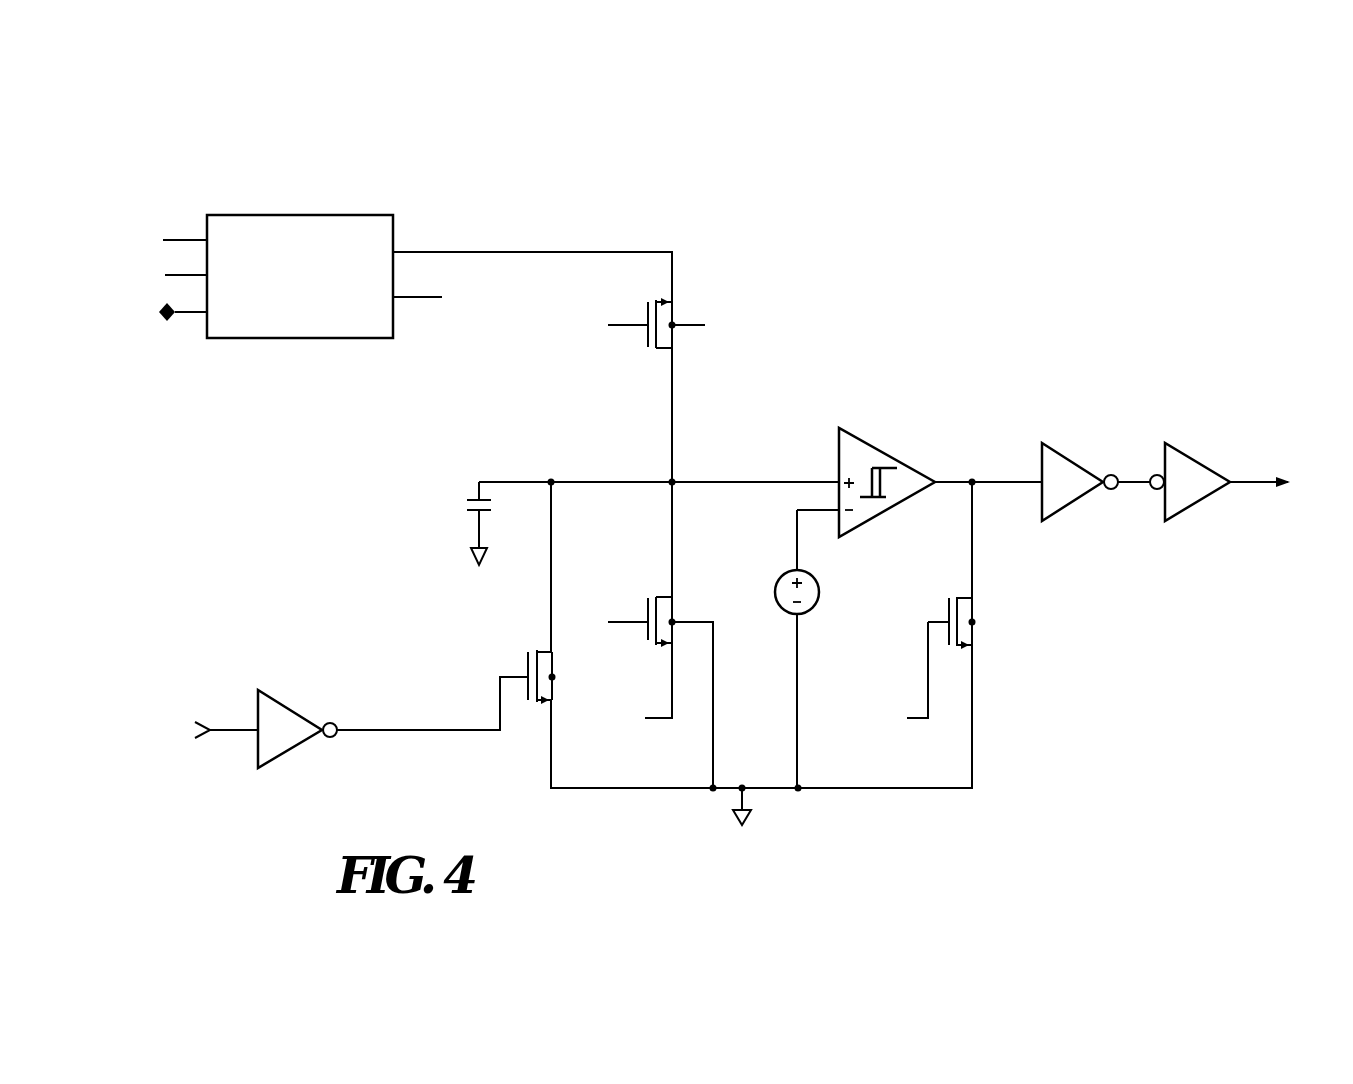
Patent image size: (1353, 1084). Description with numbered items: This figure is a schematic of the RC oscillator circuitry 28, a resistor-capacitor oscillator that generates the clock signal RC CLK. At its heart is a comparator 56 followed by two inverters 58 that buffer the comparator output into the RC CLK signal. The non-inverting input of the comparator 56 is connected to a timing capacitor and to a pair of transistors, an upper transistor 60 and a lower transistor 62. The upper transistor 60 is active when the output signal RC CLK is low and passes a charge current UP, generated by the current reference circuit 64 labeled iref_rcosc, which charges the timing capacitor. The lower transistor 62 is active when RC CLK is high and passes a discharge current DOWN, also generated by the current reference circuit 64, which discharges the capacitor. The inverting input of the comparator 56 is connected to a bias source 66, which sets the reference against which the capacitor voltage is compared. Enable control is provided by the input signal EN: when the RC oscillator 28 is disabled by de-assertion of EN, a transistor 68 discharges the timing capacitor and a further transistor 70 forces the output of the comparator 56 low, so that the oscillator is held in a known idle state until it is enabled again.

The RC oscillator circuitry 28 is at (670, 150).
The comparator 56 is at (898, 460).
The two inverters 58 is at (1160, 455).
The upper transistor 60 is at (660, 350).
The lower transistor 62 is at (668, 596).
The current reference circuit 64 is at (280, 340).
The bias source 66 is at (795, 572).
The transistor 68 is at (540, 650).
The transistor 70 is at (965, 597).